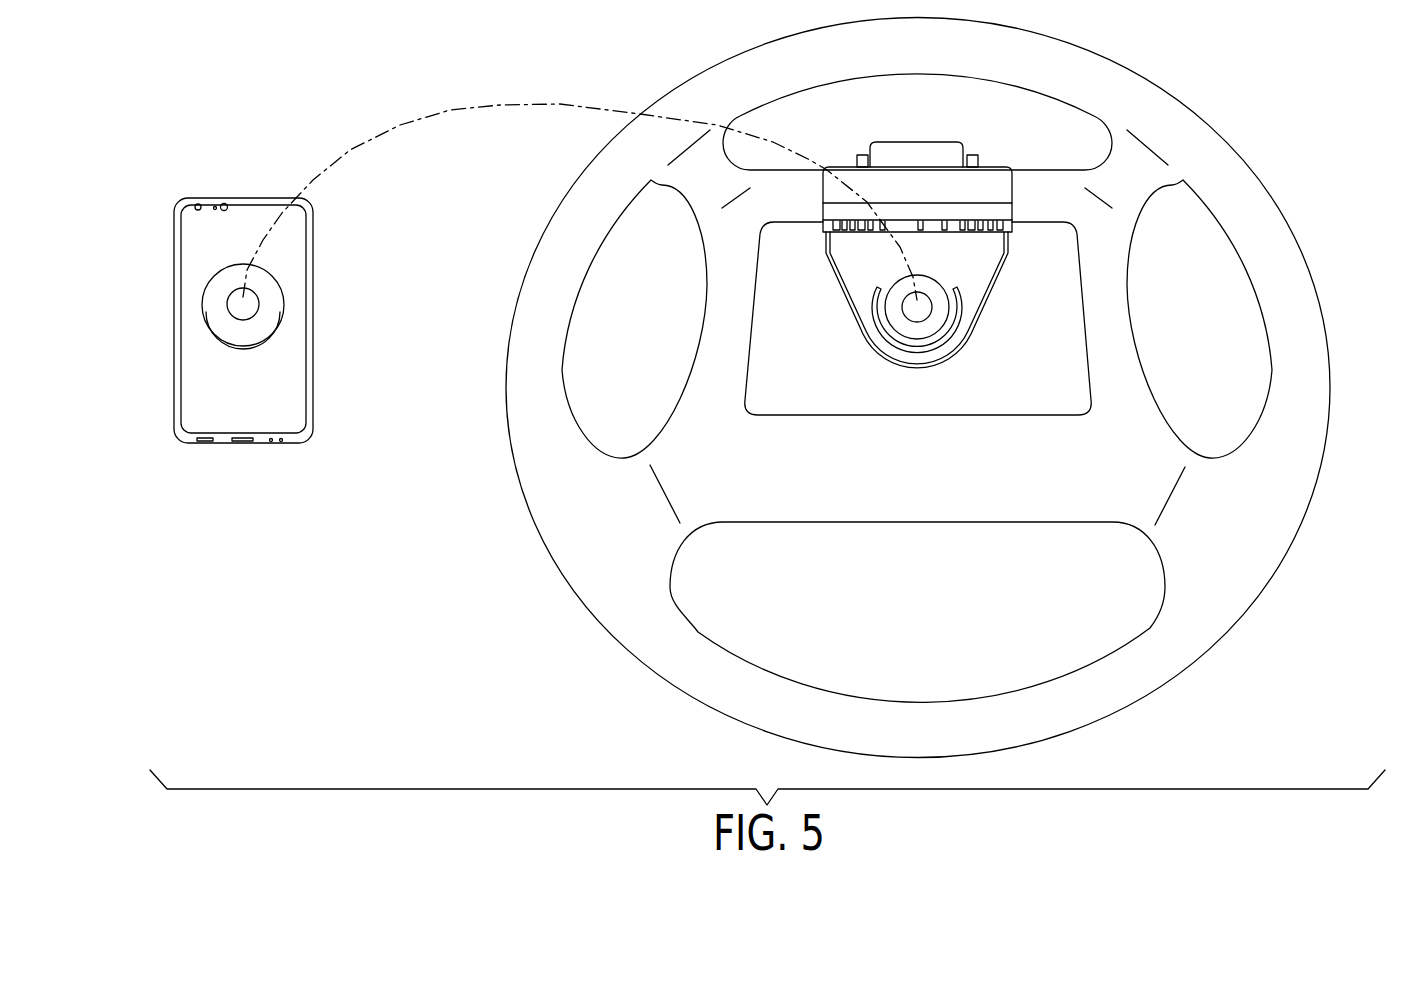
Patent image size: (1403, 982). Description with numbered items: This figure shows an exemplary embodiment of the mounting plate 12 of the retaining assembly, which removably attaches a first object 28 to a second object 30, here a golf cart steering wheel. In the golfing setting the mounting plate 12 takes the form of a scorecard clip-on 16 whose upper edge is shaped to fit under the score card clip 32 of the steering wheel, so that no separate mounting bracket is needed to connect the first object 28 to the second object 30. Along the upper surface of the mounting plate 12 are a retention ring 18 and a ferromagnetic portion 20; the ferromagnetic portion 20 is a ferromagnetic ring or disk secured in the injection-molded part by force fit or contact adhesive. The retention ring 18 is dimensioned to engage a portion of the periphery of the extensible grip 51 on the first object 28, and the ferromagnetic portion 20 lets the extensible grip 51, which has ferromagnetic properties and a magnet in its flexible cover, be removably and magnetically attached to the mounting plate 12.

The mounting plate 12 is at (1023, 289).
The scorecard clip-on 16 is at (1010, 222).
The retention ring 18 is at (942, 343).
The ferromagnetic portion 20 is at (898, 320).
The first object 28 is at (195, 353).
The second object 30 is at (1198, 148).
The score card clip 32 is at (912, 157).
The extensible grip 51 is at (267, 307).